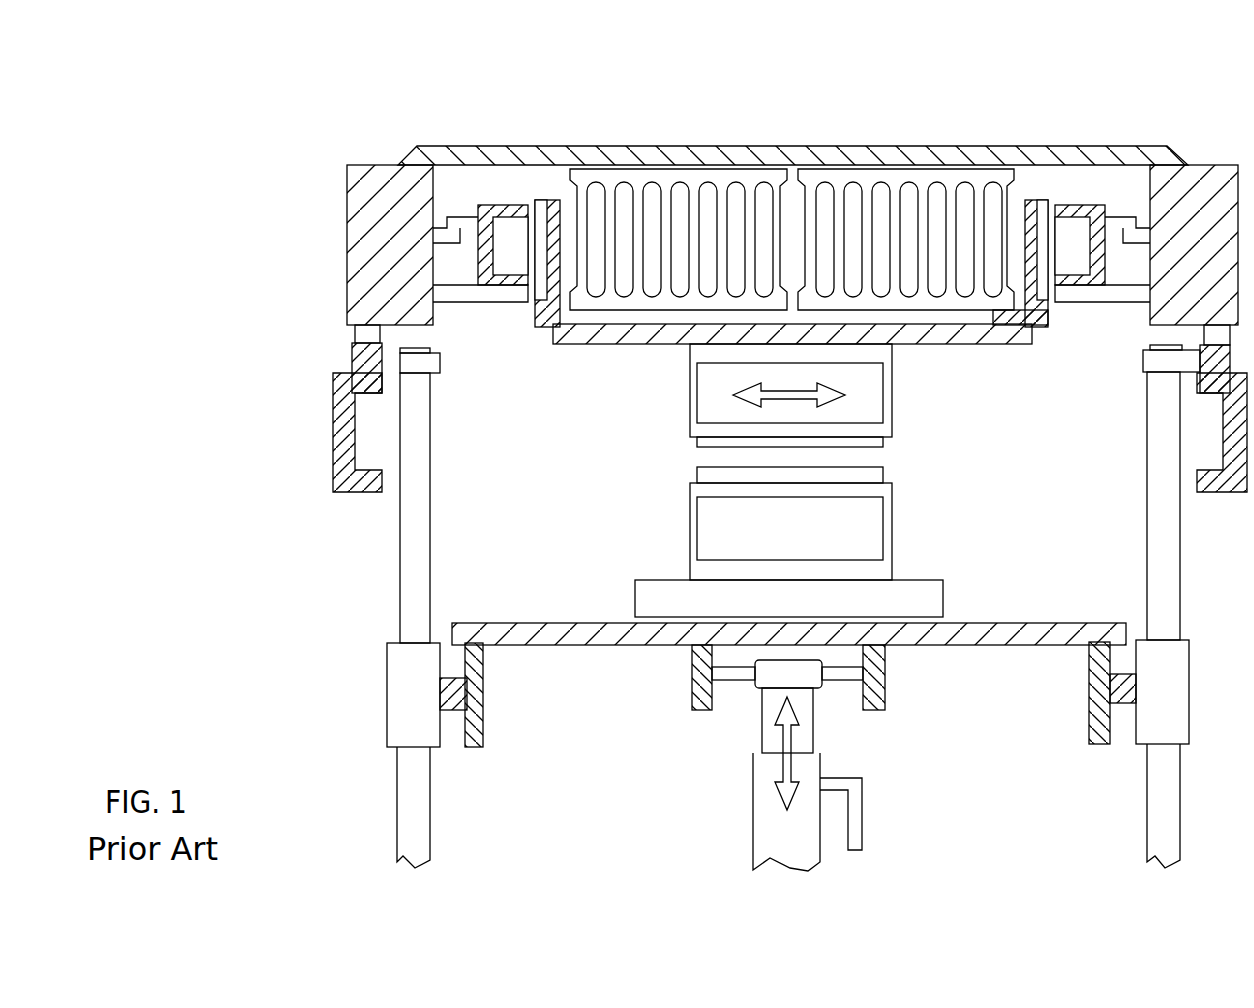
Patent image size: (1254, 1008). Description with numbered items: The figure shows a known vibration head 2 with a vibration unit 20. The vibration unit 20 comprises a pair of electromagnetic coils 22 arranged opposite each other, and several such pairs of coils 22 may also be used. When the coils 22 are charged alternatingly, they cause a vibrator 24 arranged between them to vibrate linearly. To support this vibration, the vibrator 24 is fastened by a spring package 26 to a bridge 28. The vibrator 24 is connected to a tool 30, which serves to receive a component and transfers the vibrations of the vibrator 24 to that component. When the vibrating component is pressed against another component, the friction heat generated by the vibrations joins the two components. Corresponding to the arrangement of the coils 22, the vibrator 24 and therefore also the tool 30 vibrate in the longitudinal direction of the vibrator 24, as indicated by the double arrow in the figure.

The vibration head 2 is at (1110, 120).
The vibration unit 20 is at (907, 365).
The electromagnetic coils 22 is at (507, 230).
The vibrator 24 is at (982, 344).
The spring package 26 is at (865, 180).
The bridge 28 is at (463, 146).
The tool 30 is at (690, 390).